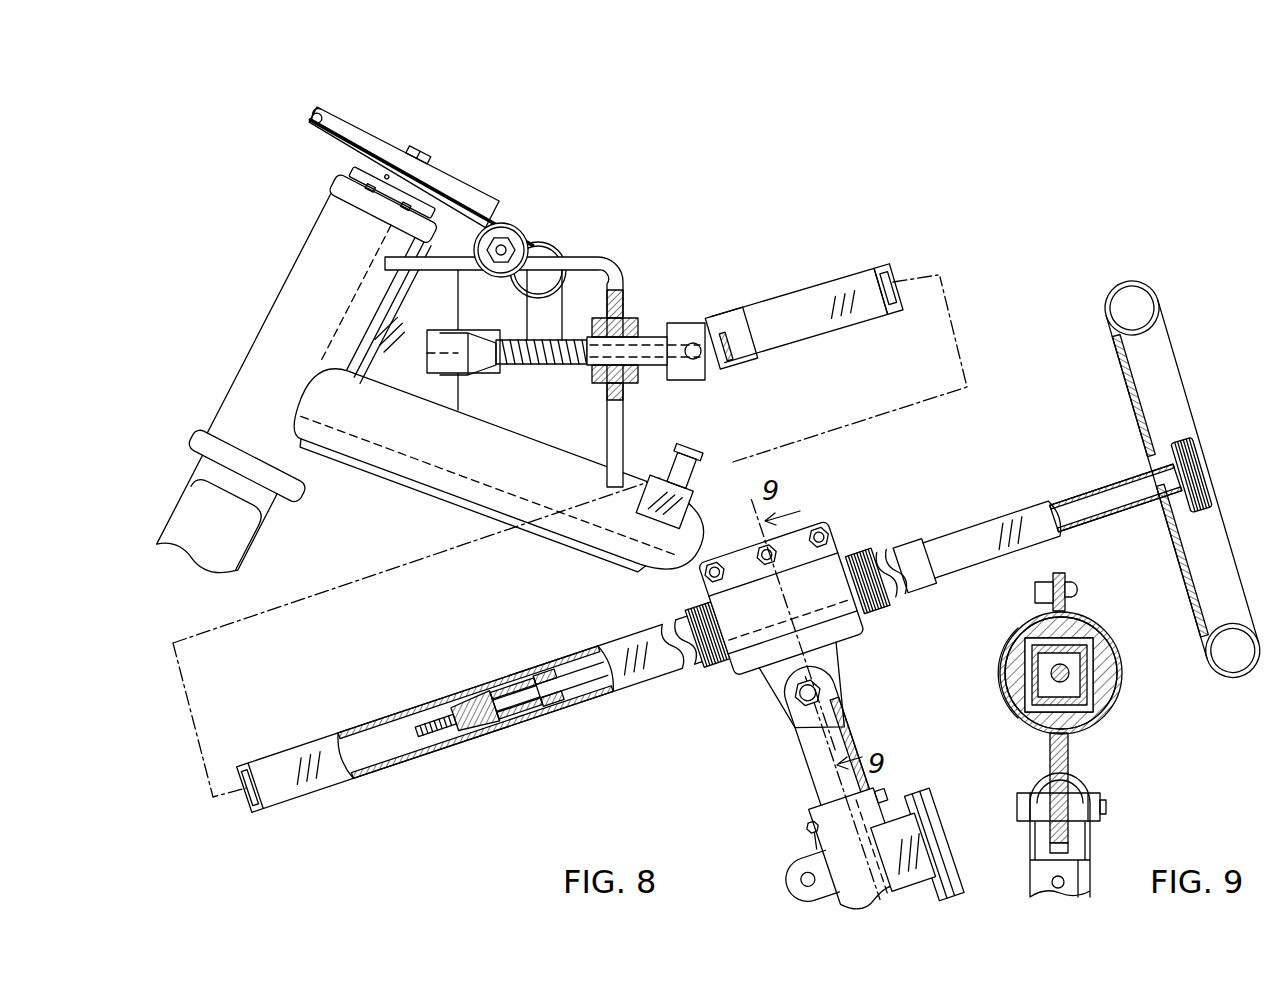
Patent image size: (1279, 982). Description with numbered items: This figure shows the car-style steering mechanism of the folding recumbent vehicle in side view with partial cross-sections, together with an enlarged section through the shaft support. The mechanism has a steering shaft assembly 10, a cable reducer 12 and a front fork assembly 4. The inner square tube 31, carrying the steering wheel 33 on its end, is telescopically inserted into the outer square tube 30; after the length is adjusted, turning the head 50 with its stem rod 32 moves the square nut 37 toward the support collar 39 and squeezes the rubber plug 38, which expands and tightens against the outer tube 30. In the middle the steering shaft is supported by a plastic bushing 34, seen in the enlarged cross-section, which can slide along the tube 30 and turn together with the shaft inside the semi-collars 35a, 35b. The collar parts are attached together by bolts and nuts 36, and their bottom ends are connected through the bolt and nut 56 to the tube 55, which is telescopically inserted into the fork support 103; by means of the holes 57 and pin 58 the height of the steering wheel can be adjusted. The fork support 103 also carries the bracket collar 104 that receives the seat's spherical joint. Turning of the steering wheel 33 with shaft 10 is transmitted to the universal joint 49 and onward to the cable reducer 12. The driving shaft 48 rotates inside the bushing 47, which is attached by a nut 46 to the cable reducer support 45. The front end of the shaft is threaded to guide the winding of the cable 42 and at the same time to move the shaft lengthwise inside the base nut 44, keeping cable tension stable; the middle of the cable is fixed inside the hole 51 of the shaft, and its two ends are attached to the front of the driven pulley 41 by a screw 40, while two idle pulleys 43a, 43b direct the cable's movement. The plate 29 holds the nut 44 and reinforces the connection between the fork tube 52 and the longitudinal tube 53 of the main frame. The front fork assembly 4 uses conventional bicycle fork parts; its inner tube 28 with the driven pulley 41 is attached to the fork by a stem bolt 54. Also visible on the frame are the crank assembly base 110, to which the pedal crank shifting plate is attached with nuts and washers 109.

In FIG. 8, the front fork assembly 4 is at (298, 375).
In FIG. 8, the steering shaft assembly 10 is at (709, 586).
In FIG. 8, the cable reducer 12 is at (506, 296).
In FIG. 8, the inner tube 28 is at (366, 173).
In FIG. 8, the plate 29 is at (406, 376).
In FIG. 8, the outer square tube 30 is at (338, 769).
In FIG. 9, the outer square tube 30 is at (1003, 646).
In FIG. 8, the inner square tube 31 is at (964, 543).
In FIG. 9, the inner square tube 31 is at (1033, 678).
In FIG. 8, the stem rod 32 is at (567, 681).
In FIG. 9, the stem rod 32 is at (1074, 677).
In FIG. 8, the steering wheel 33 is at (1229, 678).
In FIG. 8, the plastic bushing 34 is at (712, 682).
In FIG. 9, the plastic bushing 34 is at (1053, 721).
In FIG. 8, the semi-collar 35a is at (771, 677).
In FIG. 9, the semi-collar 35a is at (1011, 711).
In FIG. 9, the semi-collar 35b is at (1091, 731).
In FIG. 8, the bolts and nuts 36 is at (818, 536).
In FIG. 9, the bolts and nuts 36 is at (1072, 597).
In FIG. 8, the square nut 37 is at (489, 747).
In FIG. 8, the rubber plug 38 is at (521, 730).
In FIG. 8, the support collar 39 is at (561, 717).
In FIG. 8, the screw 40 is at (308, 121).
In FIG. 8, the driven pulley 41 is at (388, 143).
In FIG. 8, the cable 42 is at (524, 312).
In FIG. 8, the idle pulley 43a is at (500, 236).
In FIG. 8, the idle pulley 43b is at (547, 250).
In FIG. 8, the base nut 44 is at (489, 373).
In FIG. 8, the cable reducer support 45 is at (601, 263).
In FIG. 8, the nut 46 is at (614, 320).
In FIG. 8, the bushing 47 is at (633, 378).
In FIG. 8, the driving shaft 48 is at (649, 343).
In FIG. 8, the universal joint 49 is at (701, 373).
In FIG. 8, the head 50 is at (1198, 465).
In FIG. 8, the hole 51 is at (561, 368).
In FIG. 8, the fork tube 52 is at (322, 264).
In FIG. 8, the longitudinal tube 53 is at (453, 489).
In FIG. 8, the stem bolt 54 is at (421, 161).
In FIG. 8, the tube 55 is at (842, 711).
In FIG. 9, the tube 55 is at (1086, 876).
In FIG. 8, the bolt and nut 56 is at (820, 698).
In FIG. 9, the bolt and nut 56 is at (1080, 809).
In FIG. 8, the holes 57 is at (810, 781).
In FIG. 9, the holes 57 is at (1052, 883).
In FIG. 8, the pin 58 is at (811, 831).
In FIG. 8, the fork support 103 is at (857, 811).
In FIG. 8, the bracket collar 104 is at (937, 835).
In FIG. 8, the nuts and washers 109 is at (684, 461).
In FIG. 8, the crank assembly base 110 is at (652, 505).